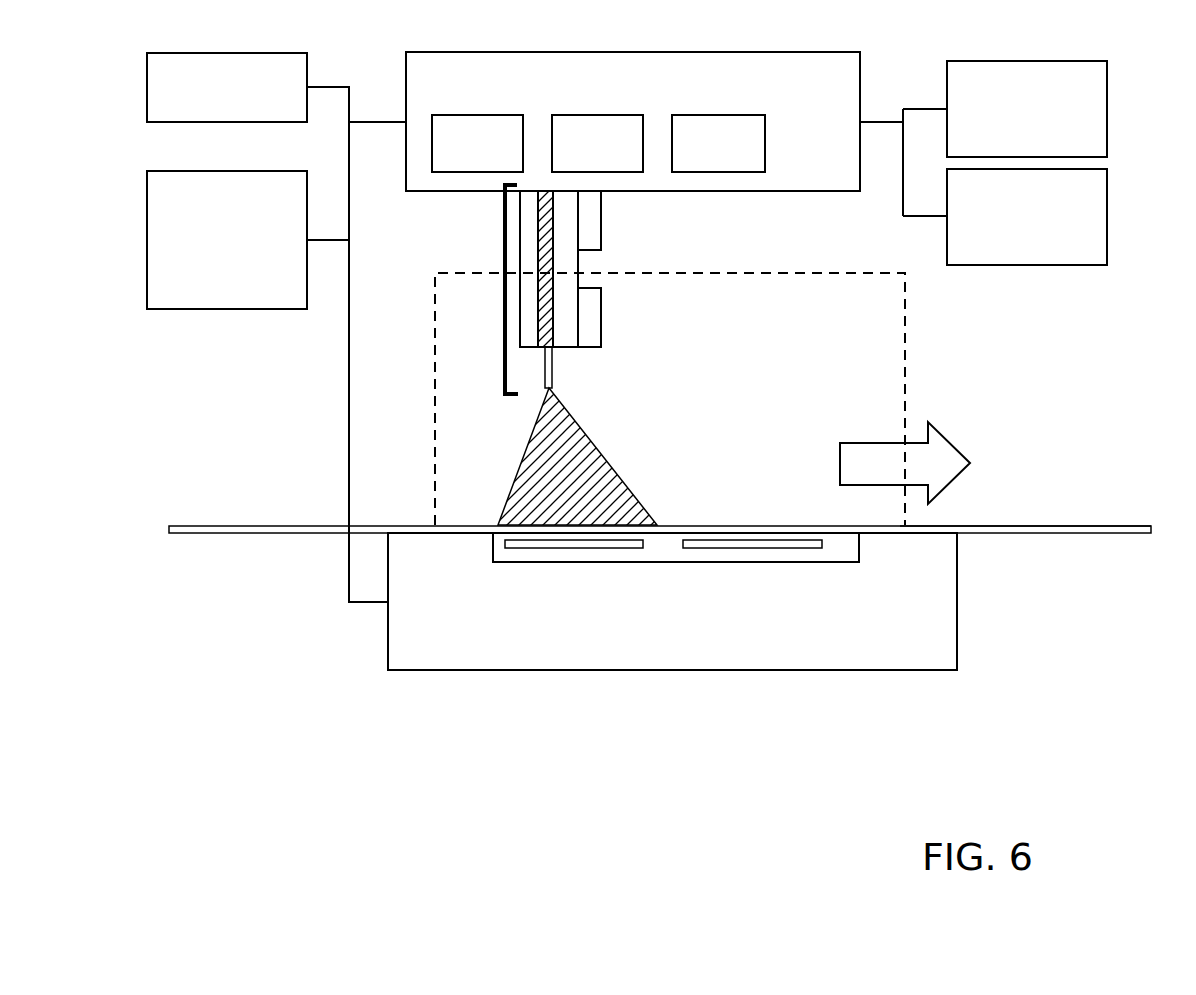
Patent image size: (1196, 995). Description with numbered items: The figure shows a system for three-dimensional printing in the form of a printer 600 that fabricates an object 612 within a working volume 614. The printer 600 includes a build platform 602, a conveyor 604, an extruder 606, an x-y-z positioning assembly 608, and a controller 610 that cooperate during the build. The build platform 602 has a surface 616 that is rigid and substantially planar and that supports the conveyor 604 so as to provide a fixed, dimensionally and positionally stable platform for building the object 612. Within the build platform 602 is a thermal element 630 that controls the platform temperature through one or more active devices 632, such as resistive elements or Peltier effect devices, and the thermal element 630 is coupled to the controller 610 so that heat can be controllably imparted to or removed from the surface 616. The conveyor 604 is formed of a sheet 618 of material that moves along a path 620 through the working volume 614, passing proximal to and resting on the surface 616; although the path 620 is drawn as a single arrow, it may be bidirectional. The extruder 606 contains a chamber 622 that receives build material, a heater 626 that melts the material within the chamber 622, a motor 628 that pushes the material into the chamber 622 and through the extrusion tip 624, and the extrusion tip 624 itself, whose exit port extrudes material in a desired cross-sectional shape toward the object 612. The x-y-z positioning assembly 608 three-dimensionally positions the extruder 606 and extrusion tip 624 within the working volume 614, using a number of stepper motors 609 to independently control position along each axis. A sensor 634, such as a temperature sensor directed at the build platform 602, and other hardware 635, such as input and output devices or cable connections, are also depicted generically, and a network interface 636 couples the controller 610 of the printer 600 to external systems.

The printer 600 is at (1094, 376).
The build platform 602 is at (672, 601).
The conveyor 604 is at (228, 526).
The extruder 606 is at (505, 241).
The x-y-z positioning assembly 608 is at (633, 121).
The stepper motors 609 is at (598, 143).
The controller 610 is at (227, 240).
The object 612 is at (598, 443).
The working volume 614 is at (905, 398).
The surface 616 is at (472, 540).
The sheet of material 618 is at (993, 525).
The path 620 is at (905, 463).
The chamber 622 is at (527, 302).
The extrusion tip 624 is at (547, 367).
The heater 626 is at (604, 312).
The motor 628 is at (604, 222).
The thermal element 630 is at (635, 562).
The active devices 632 is at (772, 552).
The sensor 634 is at (1027, 109).
The other hardware 635 is at (1027, 217).
The network interface 636 is at (227, 87).